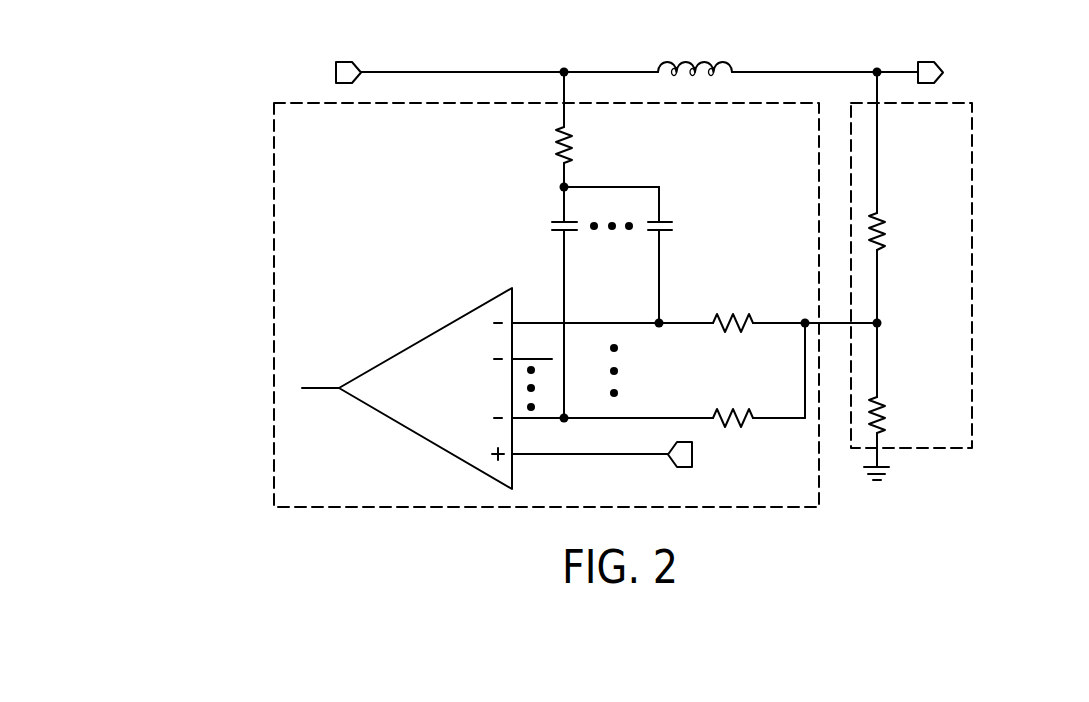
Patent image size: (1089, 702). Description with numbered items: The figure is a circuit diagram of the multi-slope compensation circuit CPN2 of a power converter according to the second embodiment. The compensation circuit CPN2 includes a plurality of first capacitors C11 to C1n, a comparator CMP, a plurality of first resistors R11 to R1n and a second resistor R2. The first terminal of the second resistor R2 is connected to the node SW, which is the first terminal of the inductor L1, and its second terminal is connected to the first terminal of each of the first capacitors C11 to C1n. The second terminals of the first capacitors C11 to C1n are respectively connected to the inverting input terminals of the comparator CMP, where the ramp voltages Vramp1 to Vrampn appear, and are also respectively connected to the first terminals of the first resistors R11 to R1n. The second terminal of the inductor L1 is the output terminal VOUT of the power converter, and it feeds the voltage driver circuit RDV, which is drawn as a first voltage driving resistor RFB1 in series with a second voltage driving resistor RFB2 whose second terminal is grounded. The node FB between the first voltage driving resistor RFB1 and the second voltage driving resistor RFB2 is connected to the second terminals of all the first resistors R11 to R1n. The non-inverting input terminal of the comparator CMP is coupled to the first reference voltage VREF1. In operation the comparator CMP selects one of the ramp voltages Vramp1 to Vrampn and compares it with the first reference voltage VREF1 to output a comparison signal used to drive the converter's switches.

The node SW is at (425, 72).
The inductor L1 is at (720, 51).
The output terminal VOUT is at (951, 72).
The second resistor R2 is at (584, 129).
The first capacitor C1n is at (586, 302).
The first capacitor C11 is at (638, 255).
The comparator CMP is at (425, 338).
The multi-slope compensation circuit CPN2 is at (274, 308).
The ramp voltage Vramp1 is at (612, 309).
The ramp voltage Vrampn is at (612, 433).
The first resistor R11 is at (759, 306).
The first resistor R1n is at (759, 375).
The node FB is at (863, 325).
The first voltage driving resistor RFB1 is at (914, 197).
The second voltage driving resistor RFB2 is at (914, 401).
The voltage driver circuit RDV is at (972, 275).
The first reference voltage VREF1 is at (648, 454).